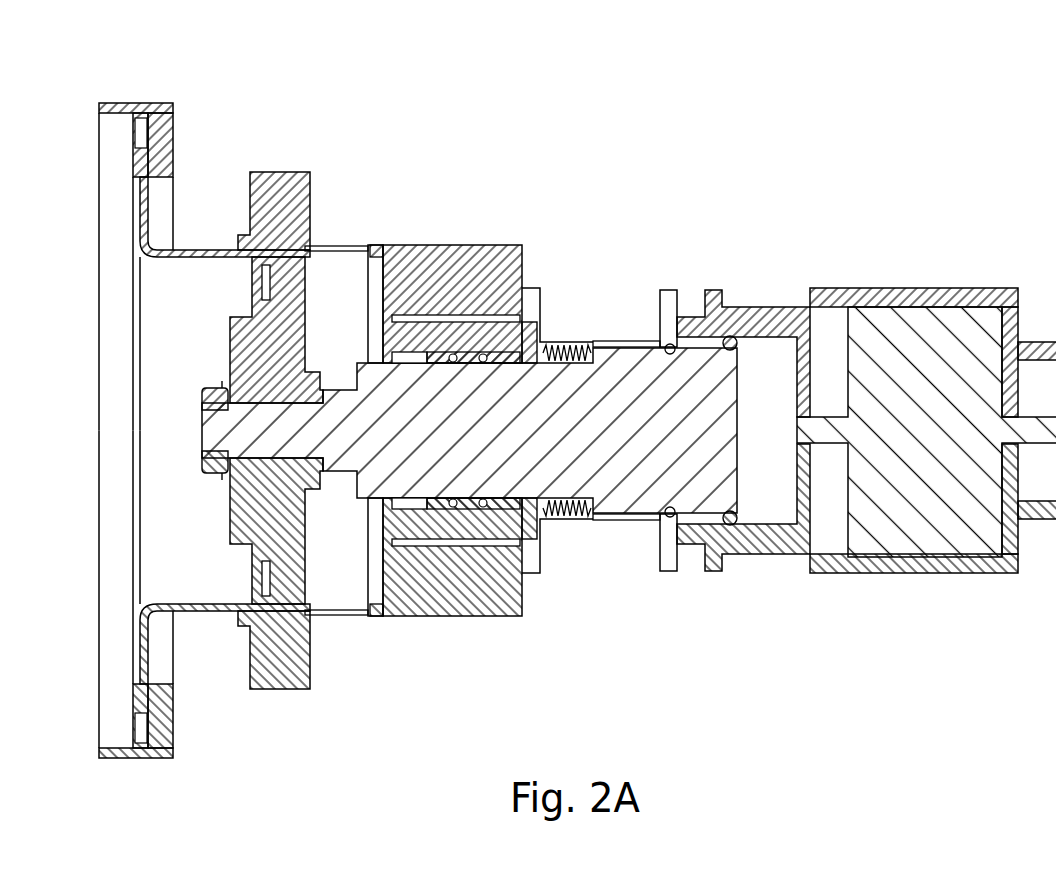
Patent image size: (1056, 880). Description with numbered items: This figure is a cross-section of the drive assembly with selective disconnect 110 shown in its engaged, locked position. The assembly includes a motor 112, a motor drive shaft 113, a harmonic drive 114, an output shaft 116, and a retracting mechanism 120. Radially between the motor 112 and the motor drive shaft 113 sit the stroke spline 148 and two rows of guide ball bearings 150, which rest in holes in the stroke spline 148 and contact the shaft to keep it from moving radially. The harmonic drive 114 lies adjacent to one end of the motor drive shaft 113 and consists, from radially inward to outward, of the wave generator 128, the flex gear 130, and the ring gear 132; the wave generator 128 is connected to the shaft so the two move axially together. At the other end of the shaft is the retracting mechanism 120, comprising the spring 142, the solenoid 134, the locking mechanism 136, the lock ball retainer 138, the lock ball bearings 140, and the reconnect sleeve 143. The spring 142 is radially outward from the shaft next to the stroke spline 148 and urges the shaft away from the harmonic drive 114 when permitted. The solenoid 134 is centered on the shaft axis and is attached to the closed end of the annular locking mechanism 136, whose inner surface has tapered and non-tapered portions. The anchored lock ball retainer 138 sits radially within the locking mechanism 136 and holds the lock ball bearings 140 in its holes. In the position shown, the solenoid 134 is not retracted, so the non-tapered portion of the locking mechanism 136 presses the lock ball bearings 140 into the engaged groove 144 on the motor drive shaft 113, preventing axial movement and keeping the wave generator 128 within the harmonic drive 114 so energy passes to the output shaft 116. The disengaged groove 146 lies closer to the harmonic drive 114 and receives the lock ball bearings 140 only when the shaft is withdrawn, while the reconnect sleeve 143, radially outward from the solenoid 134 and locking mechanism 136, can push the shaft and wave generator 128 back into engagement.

The drive assembly with selective disconnect 110 is at (547, 390).
The motor 112 is at (455, 285).
The motor drive shaft 113 is at (380, 402).
The harmonic drive 114 is at (279, 140).
The output shaft 116 is at (200, 250).
The retracting mechanism 120 is at (1022, 232).
The wave generator 128 is at (288, 520).
The flex gear 130 is at (300, 612).
The ring gear 132 is at (285, 655).
The solenoid 134 is at (983, 542).
The locking mechanism 136 is at (785, 545).
The lock ball retainer 138 is at (668, 556).
The lock ball bearings 140 is at (731, 528).
The spring 142 is at (556, 520).
The reconnect sleeve 143 is at (920, 572).
The engaged groove 144 is at (738, 343).
The disengaged groove 146 is at (667, 347).
The stroke spline 148 is at (530, 530).
The guide ball bearings 150 is at (455, 505).